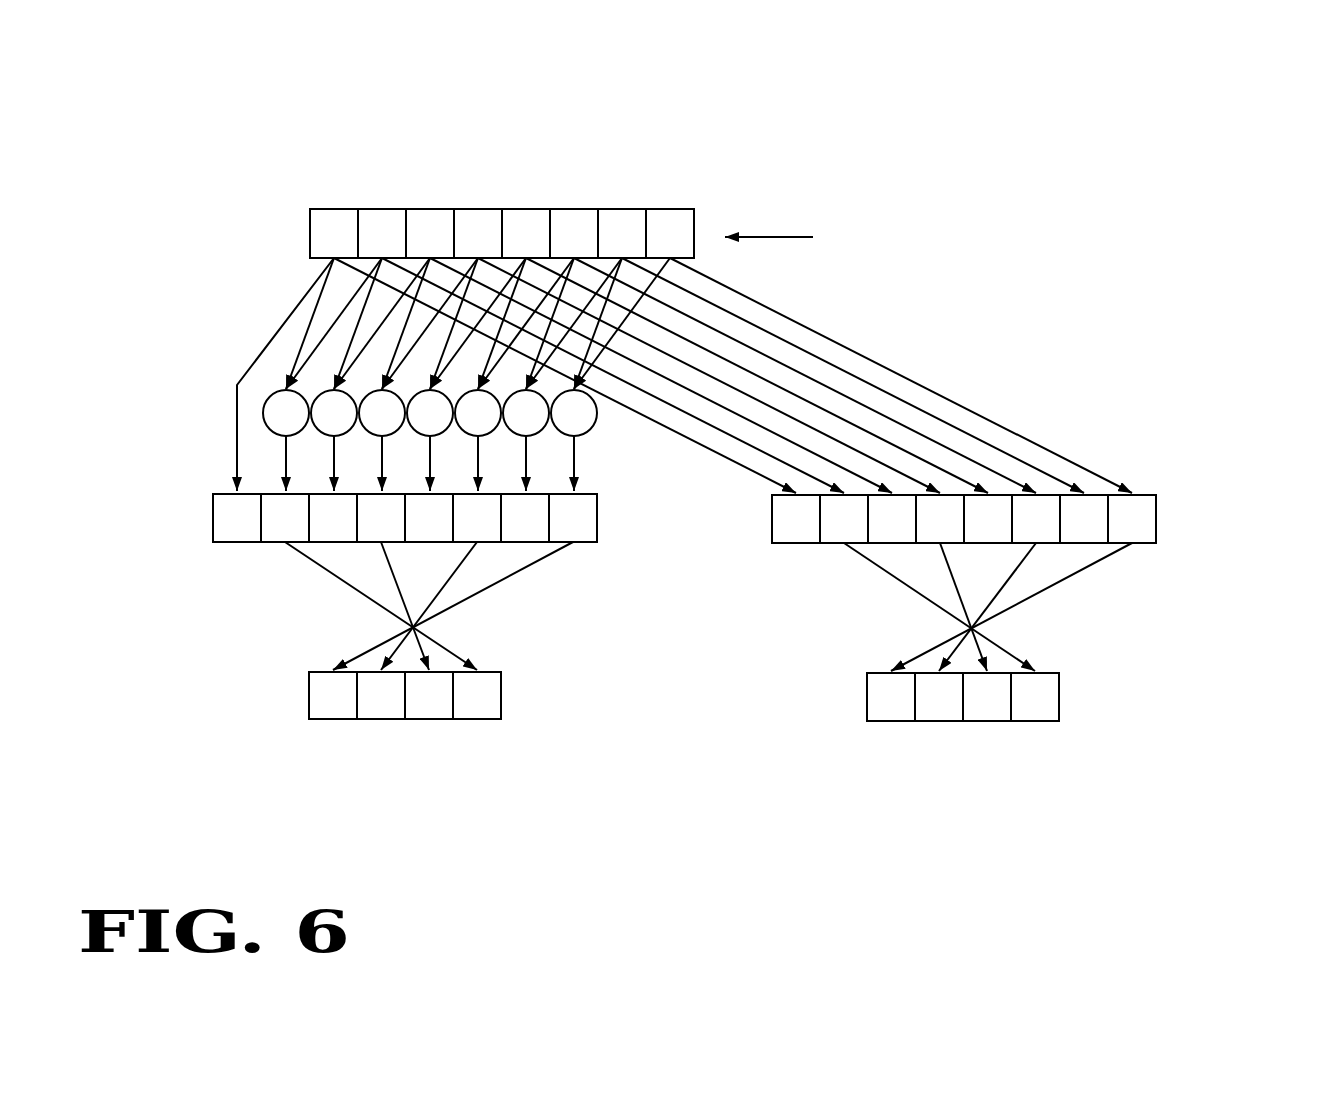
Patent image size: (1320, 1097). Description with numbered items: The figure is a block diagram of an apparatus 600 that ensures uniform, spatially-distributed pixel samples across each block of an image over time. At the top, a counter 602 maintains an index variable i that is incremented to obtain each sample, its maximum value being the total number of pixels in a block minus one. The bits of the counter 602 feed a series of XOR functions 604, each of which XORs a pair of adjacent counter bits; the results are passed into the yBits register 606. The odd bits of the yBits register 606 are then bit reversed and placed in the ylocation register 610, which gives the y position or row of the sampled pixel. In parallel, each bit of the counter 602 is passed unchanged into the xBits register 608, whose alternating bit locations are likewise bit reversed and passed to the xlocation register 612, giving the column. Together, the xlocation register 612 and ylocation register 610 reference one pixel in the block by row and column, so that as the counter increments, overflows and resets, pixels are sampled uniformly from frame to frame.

The apparatus for ensuring uniform spatially-distributed pixel samples 600 is at (1220, 150).
The counter 602 is at (693, 218).
The XOR functions 604 is at (269, 394).
The yBits register 606 is at (585, 542).
The xBits register 608 is at (1142, 545).
The ylocation register 610 is at (488, 719).
The xlocation register 612 is at (1043, 722).